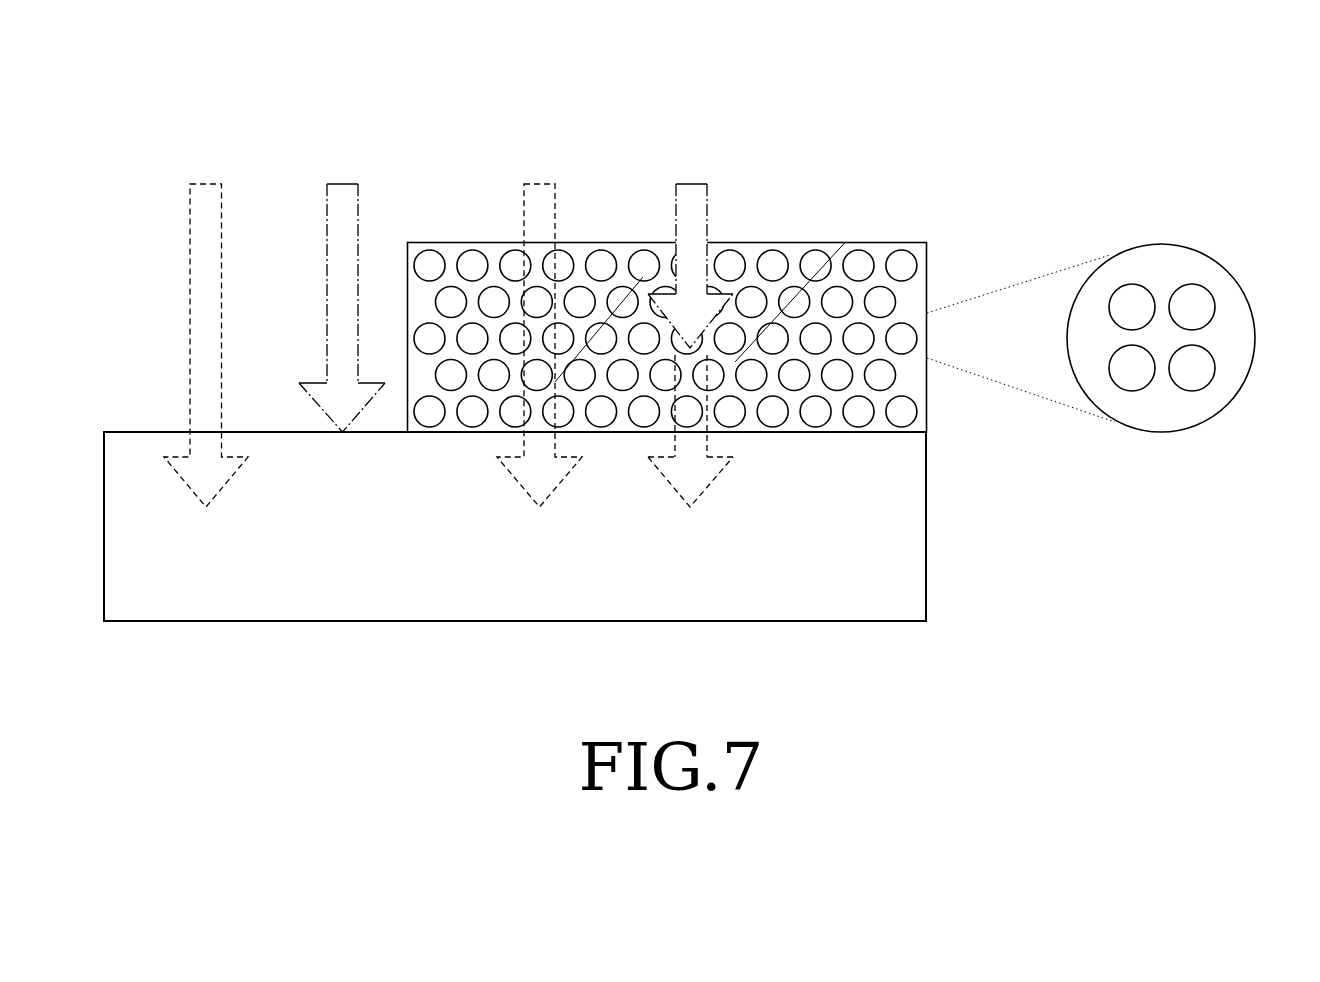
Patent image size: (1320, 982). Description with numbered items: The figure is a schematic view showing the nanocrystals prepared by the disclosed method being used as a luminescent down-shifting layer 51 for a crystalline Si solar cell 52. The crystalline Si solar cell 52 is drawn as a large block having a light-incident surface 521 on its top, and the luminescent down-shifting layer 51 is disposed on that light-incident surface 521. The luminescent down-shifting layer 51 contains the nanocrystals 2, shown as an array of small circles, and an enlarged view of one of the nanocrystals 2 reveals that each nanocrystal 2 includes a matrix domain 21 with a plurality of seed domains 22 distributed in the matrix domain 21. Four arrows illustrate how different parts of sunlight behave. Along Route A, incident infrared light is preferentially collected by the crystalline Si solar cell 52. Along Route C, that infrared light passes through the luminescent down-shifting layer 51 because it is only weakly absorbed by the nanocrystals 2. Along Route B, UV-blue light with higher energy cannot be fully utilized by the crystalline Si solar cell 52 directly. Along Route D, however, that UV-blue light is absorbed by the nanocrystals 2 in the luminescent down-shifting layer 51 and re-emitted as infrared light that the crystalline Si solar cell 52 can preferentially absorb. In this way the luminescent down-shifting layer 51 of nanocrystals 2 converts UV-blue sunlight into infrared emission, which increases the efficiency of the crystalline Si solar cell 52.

The nanocrystals 2 is at (1091, 294).
The matrix domain 21 is at (1153, 263).
The seed domains 22 is at (1195, 353).
The luminescent down-shifting layer 51 is at (859, 232).
The crystalline Si solar cell 52 is at (938, 558).
The light-incident surface 521 is at (882, 433).
The Route A is at (206, 184).
The Route B is at (343, 184).
The Route C is at (540, 184).
The Route D is at (690, 184).